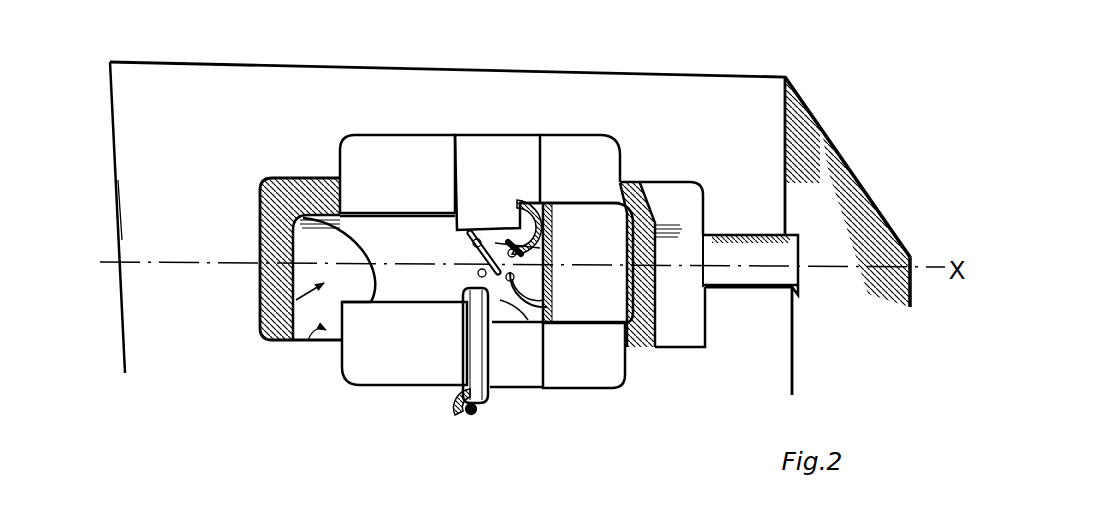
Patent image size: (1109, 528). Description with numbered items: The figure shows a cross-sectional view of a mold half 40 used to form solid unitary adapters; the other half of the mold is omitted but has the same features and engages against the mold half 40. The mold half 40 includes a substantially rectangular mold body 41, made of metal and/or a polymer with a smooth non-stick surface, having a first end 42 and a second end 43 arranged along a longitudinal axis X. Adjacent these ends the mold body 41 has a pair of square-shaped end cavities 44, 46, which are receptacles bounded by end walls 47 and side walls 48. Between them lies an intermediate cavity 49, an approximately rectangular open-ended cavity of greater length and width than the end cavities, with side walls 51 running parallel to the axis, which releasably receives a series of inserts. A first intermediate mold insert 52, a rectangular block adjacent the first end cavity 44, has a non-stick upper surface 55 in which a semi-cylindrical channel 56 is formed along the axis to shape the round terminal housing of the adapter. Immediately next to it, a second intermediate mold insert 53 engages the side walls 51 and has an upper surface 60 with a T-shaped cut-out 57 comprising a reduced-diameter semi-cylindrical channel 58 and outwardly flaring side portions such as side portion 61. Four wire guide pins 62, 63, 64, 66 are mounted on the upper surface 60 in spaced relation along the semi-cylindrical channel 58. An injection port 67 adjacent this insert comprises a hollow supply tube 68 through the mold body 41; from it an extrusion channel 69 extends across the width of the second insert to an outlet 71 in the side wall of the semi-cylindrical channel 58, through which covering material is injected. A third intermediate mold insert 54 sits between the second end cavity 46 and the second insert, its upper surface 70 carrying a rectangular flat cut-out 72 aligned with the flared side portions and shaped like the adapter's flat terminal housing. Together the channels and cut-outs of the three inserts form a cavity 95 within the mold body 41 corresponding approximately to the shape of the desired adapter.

The mold half 40 is at (299, 58).
The mold body 41 is at (166, 121).
The first end 42 is at (113, 208).
The second end 43 is at (700, 110).
The first end cavity 44 is at (278, 177).
The second end cavity 46 is at (674, 183).
The end walls 47 is at (290, 281).
The side walls 48 is at (317, 177).
The intermediate cavity 49 is at (517, 131).
The side walls 51 is at (537, 390).
The first intermediate mold insert 52 is at (382, 147).
The second intermediate mold insert 53 is at (473, 147).
The third intermediate mold insert 54 is at (572, 147).
The upper surface 55 is at (382, 379).
The semi-cylindrical channel 56 is at (417, 233).
The cut-out 57 is at (493, 240).
The semi-cylindrical channel 58 is at (540, 321).
The upper surface 60 is at (505, 171).
The side portion 61 is at (540, 320).
The wire guide pin 62 is at (470, 268).
The wire guide pin 63 is at (552, 262).
The wire guide pin 64 is at (553, 287).
The wire guide pin 66 is at (474, 280).
The injection port 67 is at (452, 408).
The supply tube 68 is at (471, 416).
The extrusion channel 69 is at (465, 386).
The upper surface 70 is at (579, 375).
The outlet 71 is at (462, 307).
The flat cut-out 72 is at (613, 305).
The cavity 95 is at (290, 302).